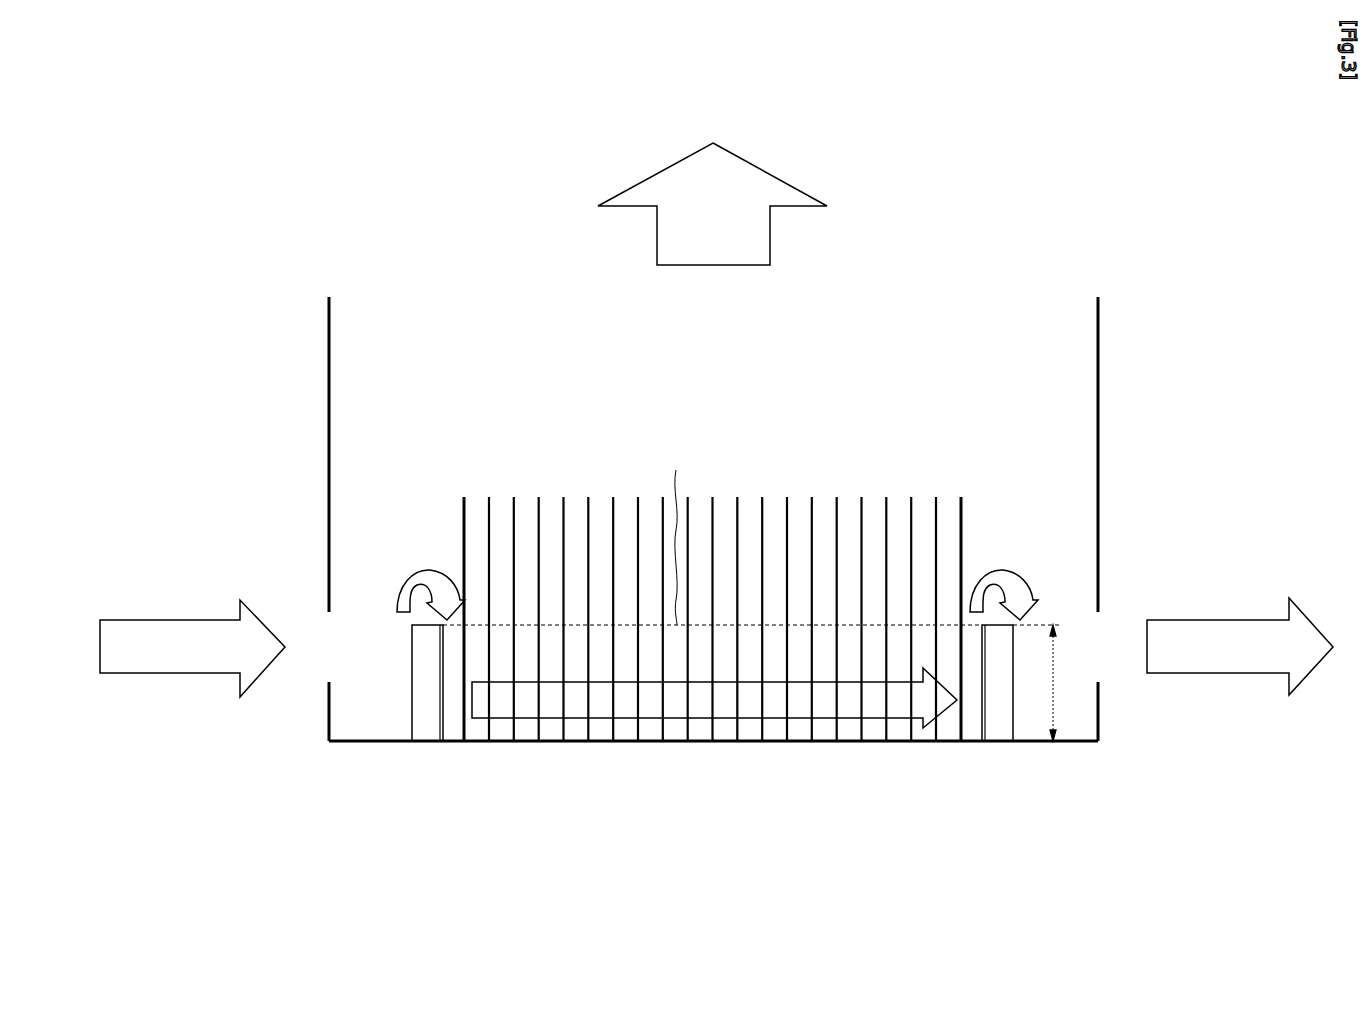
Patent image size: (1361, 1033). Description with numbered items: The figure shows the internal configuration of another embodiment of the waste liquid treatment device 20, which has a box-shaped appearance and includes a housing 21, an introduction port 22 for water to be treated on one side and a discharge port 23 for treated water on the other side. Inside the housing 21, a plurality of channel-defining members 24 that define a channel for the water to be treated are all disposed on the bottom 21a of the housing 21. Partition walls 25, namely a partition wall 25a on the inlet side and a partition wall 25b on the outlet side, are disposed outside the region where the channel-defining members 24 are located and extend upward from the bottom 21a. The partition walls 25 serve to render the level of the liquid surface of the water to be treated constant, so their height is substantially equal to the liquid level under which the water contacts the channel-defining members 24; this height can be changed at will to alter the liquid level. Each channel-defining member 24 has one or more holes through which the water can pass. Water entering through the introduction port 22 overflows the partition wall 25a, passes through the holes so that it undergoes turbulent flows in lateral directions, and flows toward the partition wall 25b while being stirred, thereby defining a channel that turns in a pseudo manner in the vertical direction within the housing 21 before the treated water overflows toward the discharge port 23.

The waste liquid treatment device 20 is at (968, 161).
The housing 21 is at (1098, 387).
The bottom 21a is at (853, 742).
The introduction port 22 is at (323, 630).
The discharge port 23 is at (1093, 632).
The channel-defining members 24 is at (463, 512).
The partition walls 25 is at (711, 723).
The partition wall 25a is at (412, 683).
The partition wall 25b is at (1010, 715).